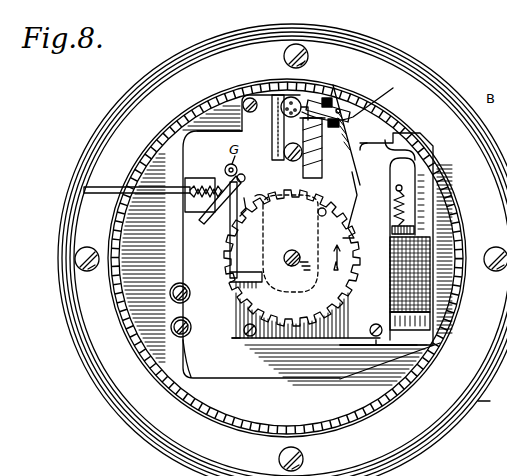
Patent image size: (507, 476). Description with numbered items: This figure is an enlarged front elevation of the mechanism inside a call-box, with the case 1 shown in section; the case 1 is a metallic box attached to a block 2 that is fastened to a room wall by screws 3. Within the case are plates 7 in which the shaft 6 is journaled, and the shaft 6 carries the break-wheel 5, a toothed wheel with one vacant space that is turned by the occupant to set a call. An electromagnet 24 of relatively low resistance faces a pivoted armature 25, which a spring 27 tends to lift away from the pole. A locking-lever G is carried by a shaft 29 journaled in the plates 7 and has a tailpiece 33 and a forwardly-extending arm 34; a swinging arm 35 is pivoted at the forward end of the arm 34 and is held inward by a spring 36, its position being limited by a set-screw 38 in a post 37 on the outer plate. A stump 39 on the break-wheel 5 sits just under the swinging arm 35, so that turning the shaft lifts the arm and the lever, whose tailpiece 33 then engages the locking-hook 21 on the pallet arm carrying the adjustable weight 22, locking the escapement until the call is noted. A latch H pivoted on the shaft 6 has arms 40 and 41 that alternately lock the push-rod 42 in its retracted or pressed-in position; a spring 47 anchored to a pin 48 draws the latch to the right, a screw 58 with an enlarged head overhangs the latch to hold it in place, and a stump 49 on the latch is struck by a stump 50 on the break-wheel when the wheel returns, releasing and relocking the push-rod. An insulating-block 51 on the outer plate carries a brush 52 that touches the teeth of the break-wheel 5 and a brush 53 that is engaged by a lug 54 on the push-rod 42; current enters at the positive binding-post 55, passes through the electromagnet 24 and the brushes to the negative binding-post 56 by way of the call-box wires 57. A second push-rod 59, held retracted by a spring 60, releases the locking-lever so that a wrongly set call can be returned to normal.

The case 1 is at (428, 380).
The block 2 is at (107, 368).
The screws 3 is at (299, 44).
The break-wheel 5 is at (302, 264).
The shaft 6 is at (296, 250).
The plates 7 is at (270, 334).
The locking-hook 21 is at (216, 207).
The weight 22 is at (491, 411).
The electromagnet 24 is at (432, 262).
The armature 25 is at (414, 230).
The spring 27 is at (410, 197).
The shaft 29 is at (408, 150).
The tailpiece 33 is at (222, 178).
The forwardly-extending arm 34 is at (226, 167).
The swinging arm 35 is at (228, 262).
The spring 36 is at (250, 173).
The post 37 is at (241, 212).
The set-screw 38 is at (268, 202).
The stump 39 is at (256, 266).
The arm 40 is at (300, 100).
The arm 41 is at (277, 95).
The push-rod 42 is at (262, 118).
The spring 47 is at (318, 175).
The pin 48 is at (388, 180).
The stump 49 is at (322, 148).
The stump 50 is at (324, 215).
The insulating-block 51 is at (358, 135).
The brush 52 is at (357, 210).
The brush 53 is at (340, 108).
The lug 54 is at (272, 127).
The binding-post 55 is at (171, 327).
The binding-post 56 is at (170, 293).
The call-box wires 57 is at (183, 245).
The screw 58 is at (284, 151).
The push-rod 59 is at (112, 187).
The spring 60 is at (190, 196).